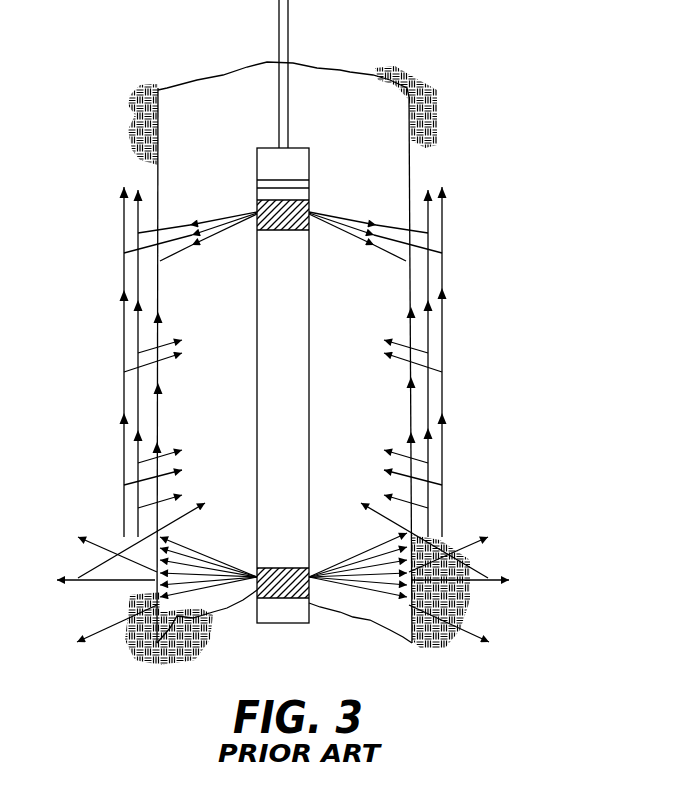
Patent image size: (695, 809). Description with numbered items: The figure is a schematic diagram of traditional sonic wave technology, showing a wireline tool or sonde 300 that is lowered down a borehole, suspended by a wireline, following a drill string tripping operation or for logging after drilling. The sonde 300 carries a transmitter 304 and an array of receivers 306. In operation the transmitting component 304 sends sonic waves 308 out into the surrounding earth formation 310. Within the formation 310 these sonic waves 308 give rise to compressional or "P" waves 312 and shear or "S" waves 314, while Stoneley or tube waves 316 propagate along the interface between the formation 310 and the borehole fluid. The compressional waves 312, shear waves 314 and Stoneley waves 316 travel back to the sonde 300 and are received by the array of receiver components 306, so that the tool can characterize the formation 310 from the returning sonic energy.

The wireline tool or sonde 300 is at (268, 324).
The transmitter 304 is at (259, 590).
The array of receivers 306 is at (309, 212).
The sonic waves 308 is at (288, 30).
The earth formation 310 is at (476, 597).
The compressional or "P" waves 312 is at (455, 526).
The shear or "S" waves 314 is at (122, 490).
The Stoneley or tube waves 316 is at (413, 397).